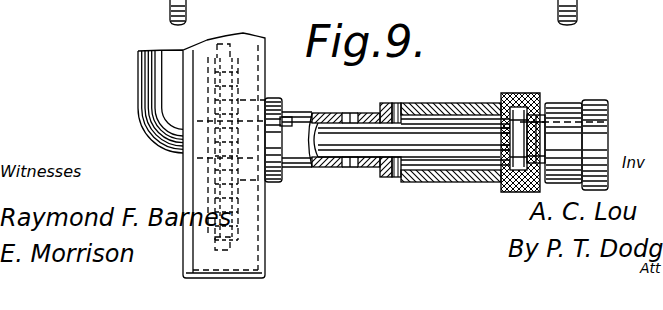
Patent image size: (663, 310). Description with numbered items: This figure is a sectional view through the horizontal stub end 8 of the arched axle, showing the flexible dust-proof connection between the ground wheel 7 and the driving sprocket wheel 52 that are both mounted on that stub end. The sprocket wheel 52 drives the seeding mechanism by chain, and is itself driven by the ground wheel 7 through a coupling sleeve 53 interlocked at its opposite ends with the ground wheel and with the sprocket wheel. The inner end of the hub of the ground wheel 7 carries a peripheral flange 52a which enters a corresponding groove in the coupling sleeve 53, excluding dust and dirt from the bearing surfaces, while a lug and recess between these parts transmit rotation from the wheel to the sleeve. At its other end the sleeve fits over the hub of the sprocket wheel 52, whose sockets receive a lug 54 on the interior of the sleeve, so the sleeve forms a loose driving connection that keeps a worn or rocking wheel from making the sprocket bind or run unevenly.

The sprocket wheel 52 is at (220, 56).
The peripheral flange 52a is at (521, 131).
The coupling sleeve 53 is at (443, 103).
The lug 54 is at (363, 113).
The horizontal stub end 8 is at (354, 167).
The ground wheel 7 is at (592, 101).